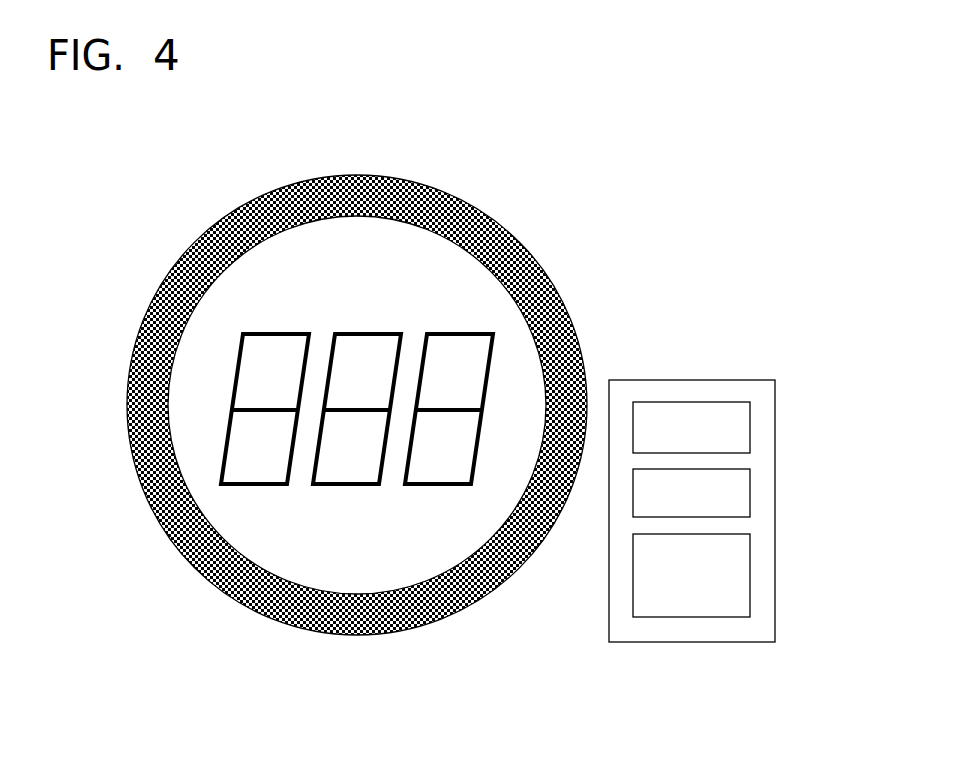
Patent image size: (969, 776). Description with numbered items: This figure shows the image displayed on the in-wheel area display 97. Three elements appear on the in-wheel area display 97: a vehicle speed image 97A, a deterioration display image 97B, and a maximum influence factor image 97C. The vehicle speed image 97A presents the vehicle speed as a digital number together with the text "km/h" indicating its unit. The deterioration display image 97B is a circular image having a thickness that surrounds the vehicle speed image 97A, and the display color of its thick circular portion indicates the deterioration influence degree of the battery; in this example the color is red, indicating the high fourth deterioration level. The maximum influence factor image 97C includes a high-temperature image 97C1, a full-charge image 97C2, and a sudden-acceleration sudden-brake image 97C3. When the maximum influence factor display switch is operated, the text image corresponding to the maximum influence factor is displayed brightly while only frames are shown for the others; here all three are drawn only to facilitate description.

The in-wheel area display 97 is at (515, 181).
The vehicle speed image 97A is at (473, 333).
The deterioration display image 97B is at (173, 261).
The maximum influence factor image 97C is at (690, 380).
The high-temperature image 97C1 is at (750, 428).
The full-charge image 97C2 is at (750, 492).
The sudden-acceleration sudden-brake image 97C3 is at (750, 575).